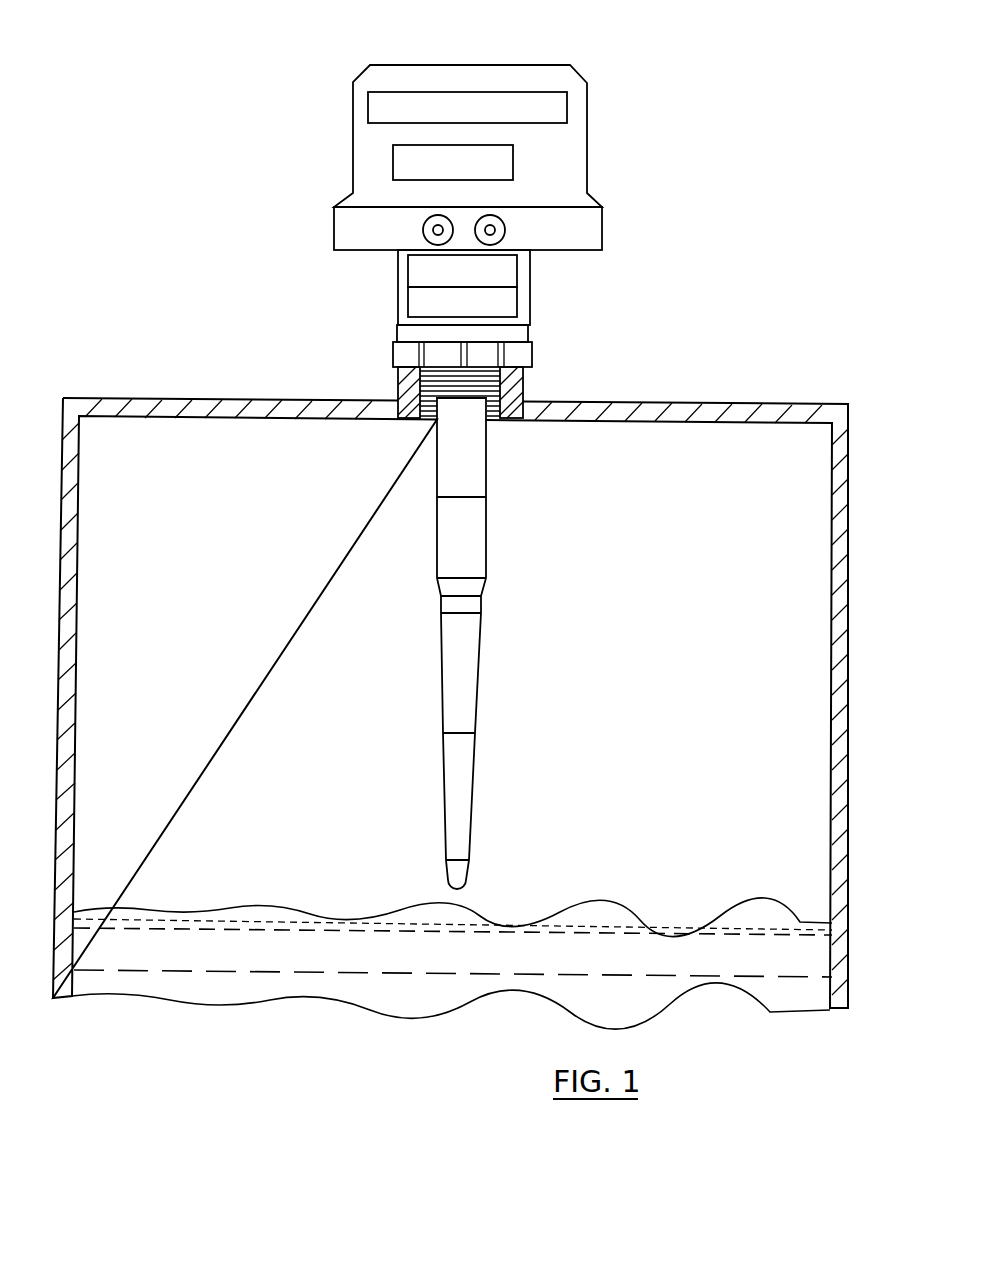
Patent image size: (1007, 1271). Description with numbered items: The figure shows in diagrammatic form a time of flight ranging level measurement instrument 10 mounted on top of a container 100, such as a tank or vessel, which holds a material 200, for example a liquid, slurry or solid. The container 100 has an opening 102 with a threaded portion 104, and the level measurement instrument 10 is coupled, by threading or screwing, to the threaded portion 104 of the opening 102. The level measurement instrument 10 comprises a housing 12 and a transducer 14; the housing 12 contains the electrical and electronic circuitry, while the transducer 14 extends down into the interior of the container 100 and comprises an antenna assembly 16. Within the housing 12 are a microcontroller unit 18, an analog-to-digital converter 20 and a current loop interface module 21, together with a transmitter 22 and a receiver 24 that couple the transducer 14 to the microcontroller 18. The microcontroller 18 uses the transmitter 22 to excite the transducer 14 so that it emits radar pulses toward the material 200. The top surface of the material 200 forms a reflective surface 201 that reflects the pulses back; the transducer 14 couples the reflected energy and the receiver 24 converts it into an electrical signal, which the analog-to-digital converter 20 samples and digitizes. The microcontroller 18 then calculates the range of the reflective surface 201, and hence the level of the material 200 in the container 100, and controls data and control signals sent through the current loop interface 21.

The level measurement instrument 10 is at (650, 40).
The housing 12 is at (452, 195).
The transducer 14 is at (418, 643).
The antenna assembly 16 is at (540, 548).
The microcontroller unit 18 is at (567, 106).
The analog-to-digital converter 20 is at (513, 157).
The current loop interface module 21 is at (400, 232).
The transmitter 22 is at (502, 311).
The receiver 24 is at (502, 282).
The container 100 is at (722, 396).
The opening 102 is at (424, 428).
The threaded portion 104 is at (520, 381).
The material 200 is at (338, 964).
The reflective surface 201 is at (680, 921).